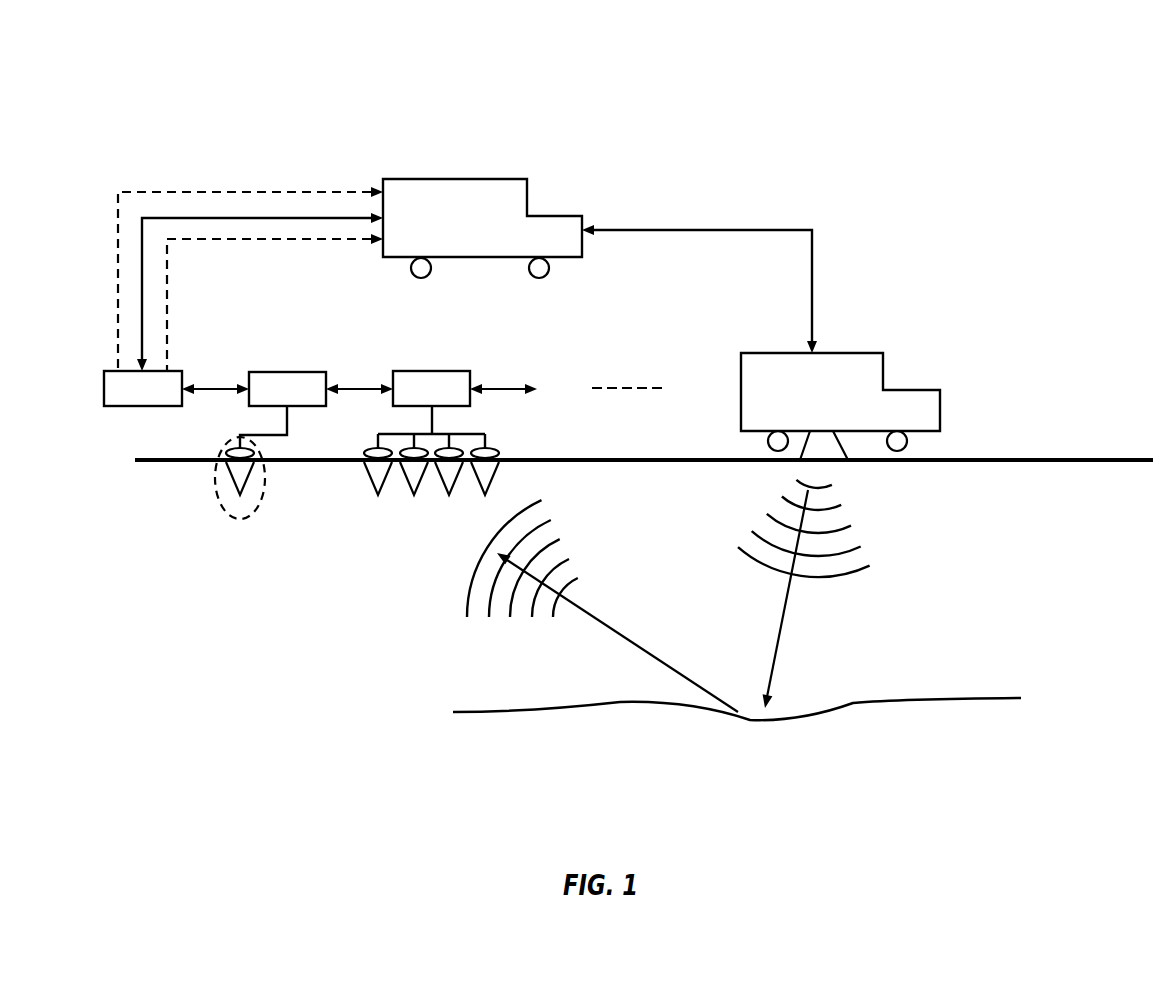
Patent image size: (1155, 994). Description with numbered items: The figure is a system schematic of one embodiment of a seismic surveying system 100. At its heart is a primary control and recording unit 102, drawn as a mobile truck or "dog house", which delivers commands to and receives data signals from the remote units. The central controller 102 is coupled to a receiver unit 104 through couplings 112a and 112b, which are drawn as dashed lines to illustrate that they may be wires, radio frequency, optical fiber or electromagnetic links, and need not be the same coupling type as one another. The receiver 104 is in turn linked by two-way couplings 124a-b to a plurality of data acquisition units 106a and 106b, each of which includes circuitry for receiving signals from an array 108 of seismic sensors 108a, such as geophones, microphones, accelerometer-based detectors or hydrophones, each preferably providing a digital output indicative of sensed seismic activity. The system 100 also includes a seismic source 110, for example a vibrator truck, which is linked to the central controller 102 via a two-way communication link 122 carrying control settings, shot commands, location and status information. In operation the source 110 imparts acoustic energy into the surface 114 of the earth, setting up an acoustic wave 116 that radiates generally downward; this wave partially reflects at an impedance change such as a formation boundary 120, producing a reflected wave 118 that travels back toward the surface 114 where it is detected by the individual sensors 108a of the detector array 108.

The seismic surveying system 100 is at (158, 93).
The primary control and recording unit 102 is at (505, 179).
The receiver unit 104 is at (104, 386).
The data acquisition unit 106a is at (300, 372).
The data acquisition unit 106b is at (445, 371).
The array of seismic sensors 108 is at (400, 505).
The seismic sensor 108a is at (213, 514).
The seismic source 110 is at (872, 353).
The coupling 112a is at (327, 216).
The coupling 112b is at (245, 240).
The surface of the earth 114 is at (1048, 458).
The acoustic wave 116 is at (870, 519).
The reflected wave 118 is at (487, 640).
The formation boundary 120 is at (845, 708).
The two-way communication link 122 is at (752, 230).
The couplings 124a-b is at (212, 392).